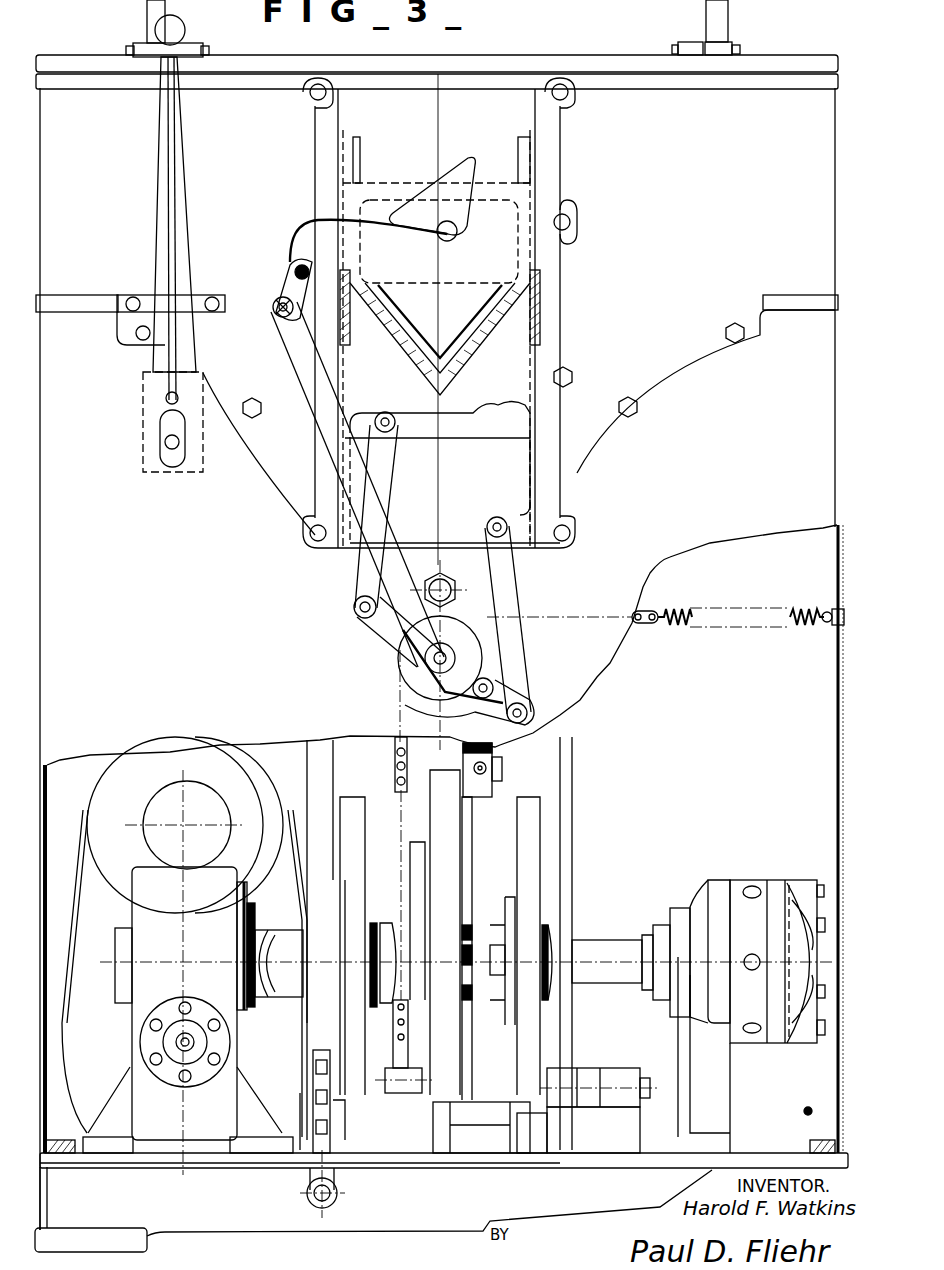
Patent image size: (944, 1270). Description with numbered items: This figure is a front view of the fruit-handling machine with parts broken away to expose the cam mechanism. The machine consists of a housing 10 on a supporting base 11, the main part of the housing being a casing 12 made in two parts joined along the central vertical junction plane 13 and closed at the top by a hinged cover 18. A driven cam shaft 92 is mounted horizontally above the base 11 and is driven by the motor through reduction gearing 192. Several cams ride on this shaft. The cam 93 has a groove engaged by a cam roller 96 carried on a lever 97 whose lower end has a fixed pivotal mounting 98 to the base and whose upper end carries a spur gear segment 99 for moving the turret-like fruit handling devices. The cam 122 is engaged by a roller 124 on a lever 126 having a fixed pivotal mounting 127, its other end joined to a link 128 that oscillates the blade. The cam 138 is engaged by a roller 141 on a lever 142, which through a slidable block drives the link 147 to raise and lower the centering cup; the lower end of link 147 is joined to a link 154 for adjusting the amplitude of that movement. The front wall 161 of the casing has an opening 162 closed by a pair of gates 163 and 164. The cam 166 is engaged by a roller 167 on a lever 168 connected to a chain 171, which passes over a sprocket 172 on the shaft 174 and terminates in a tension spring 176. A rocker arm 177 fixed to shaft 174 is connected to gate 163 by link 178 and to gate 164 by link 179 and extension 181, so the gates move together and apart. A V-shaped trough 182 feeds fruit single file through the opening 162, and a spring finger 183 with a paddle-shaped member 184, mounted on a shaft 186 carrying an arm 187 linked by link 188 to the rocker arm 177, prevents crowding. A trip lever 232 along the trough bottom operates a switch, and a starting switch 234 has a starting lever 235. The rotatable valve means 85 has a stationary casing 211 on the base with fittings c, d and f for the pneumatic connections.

The housing 10 is at (847, 229).
The supporting base 11 is at (258, 1222).
The casing 12 is at (44, 218).
The central vertical junction plane 13 is at (438, 96).
The hinged cover 18 is at (612, 60).
The valve means 85 is at (750, 868).
The cam shaft 92 is at (596, 942).
The cam 93 is at (442, 772).
The cam roller 96 is at (468, 950).
The lever 97 is at (482, 837).
The fixed pivotal mounting 98 is at (474, 1138).
The spur gear segment 99 is at (493, 756).
The cam 122 is at (537, 808).
The roller 124 is at (545, 1086).
The lever 126 is at (583, 1108).
The fixed pivotal mounting 127 is at (602, 1072).
The link 128 is at (566, 849).
The cam 138 is at (352, 798).
The roller 141 is at (345, 1106).
The lever 142 is at (313, 1063).
The link 147 is at (312, 1020).
The link 154 is at (330, 1160).
The front wall 161 is at (648, 237).
The opening 162 is at (491, 201).
The gate 163 is at (420, 428).
The gate 164 is at (378, 188).
The cam 166 is at (410, 850).
The roller 167 is at (422, 1086).
The lever 168 is at (390, 1094).
The chain 171 is at (392, 742).
The sprocket 172 is at (406, 682).
The shaft 174 is at (455, 655).
The tension spring 176 is at (683, 622).
The rocker arm 177 is at (378, 626).
The link 178 is at (360, 571).
The link 179 is at (508, 580).
The extension 181 is at (525, 463).
The V-shaped trough 182 is at (487, 342).
The spring finger 183 is at (383, 236).
The paddle-shaped member 184 is at (453, 170).
The shaft 186 is at (294, 272).
The arm 187 is at (276, 318).
The link 188 is at (318, 402).
The reduction gearing 192 is at (138, 914).
The stationary casing 211 is at (726, 880).
The trip lever 232 is at (478, 302).
The starting switch 234 is at (144, 468).
The starting lever 235 is at (177, 178).
The fitting f is at (762, 884).
The fitting d is at (752, 947).
The fitting c is at (752, 1015).